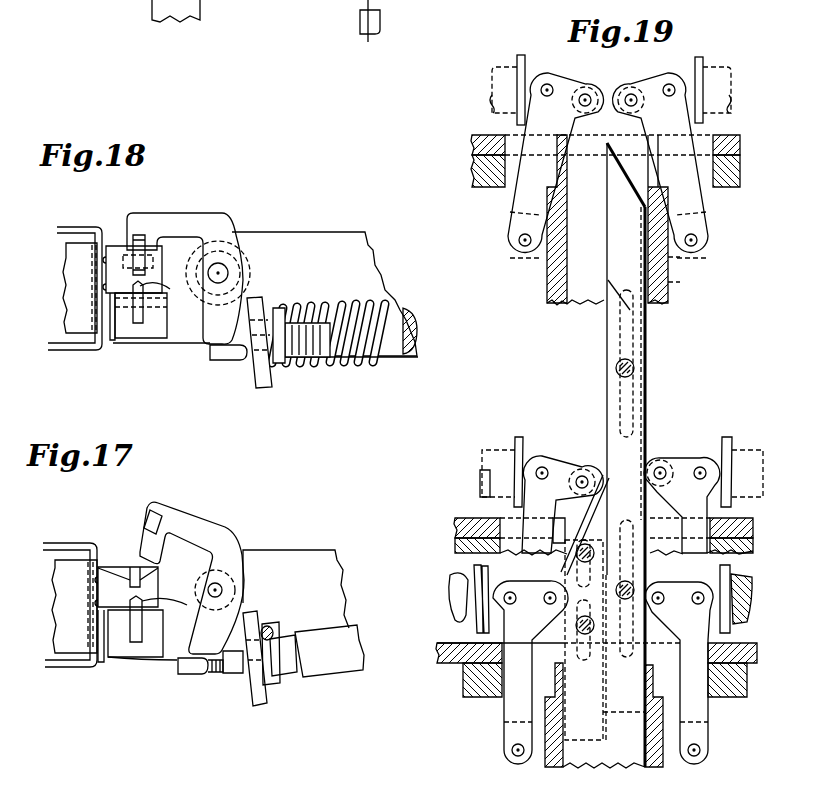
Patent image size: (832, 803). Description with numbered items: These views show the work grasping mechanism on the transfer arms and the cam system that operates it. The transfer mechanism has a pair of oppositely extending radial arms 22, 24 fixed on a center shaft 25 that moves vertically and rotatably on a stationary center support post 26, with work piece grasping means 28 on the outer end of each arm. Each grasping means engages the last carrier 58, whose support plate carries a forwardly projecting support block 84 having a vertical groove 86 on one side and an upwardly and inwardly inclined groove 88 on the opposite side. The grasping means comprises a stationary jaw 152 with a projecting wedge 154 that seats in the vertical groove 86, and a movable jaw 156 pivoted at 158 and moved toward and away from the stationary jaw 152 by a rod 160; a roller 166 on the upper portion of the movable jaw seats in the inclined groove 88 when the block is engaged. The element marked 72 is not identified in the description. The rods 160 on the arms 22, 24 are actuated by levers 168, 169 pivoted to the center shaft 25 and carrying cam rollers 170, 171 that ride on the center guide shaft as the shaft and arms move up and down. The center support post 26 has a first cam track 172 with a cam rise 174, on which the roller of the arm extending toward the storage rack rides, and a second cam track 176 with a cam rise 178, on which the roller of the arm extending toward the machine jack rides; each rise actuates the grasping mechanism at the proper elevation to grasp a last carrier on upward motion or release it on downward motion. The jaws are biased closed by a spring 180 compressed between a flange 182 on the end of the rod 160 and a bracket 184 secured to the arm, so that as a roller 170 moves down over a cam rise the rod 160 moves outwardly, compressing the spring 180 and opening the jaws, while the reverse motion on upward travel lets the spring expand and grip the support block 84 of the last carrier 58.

In FIG. 18, the radial arm 22 is at (326, 219).
In FIG. 17, the radial arm 22 is at (315, 550).
In FIG. 19, the radial arm 22 is at (484, 189).
In FIG. 19, the radial arm 24 is at (725, 190).
In FIG. 19, the center shaft 25 is at (667, 277).
In FIG. 19, the center support post 26 is at (650, 417).
In FIG. 18, the work piece grasping means 28 is at (214, 367).
In FIG. 17, the work piece grasping means 28 is at (169, 676).
In FIG. 18, the last carrier 58 is at (64, 227).
In FIG. 17, the last carrier 58 is at (57, 545).
In FIG. 18, the strip 72 is at (112, 342).
In FIG. 17, the strip 72 is at (103, 660).
In FIG. 18, the support block 84 is at (109, 252).
In FIG. 17, the support block 84 is at (108, 568).
In FIG. 18, the vertical groove 86 is at (144, 285).
In FIG. 17, the vertical groove 86 is at (141, 598).
In FIG. 18, the inclined groove 88 is at (148, 252).
In FIG. 17, the inclined groove 88 is at (134, 570).
In FIG. 18, the stationary jaw 152 is at (153, 340).
In FIG. 17, the stationary jaw 152 is at (130, 658).
In FIG. 18, the wedge 154 is at (141, 297).
In FIG. 17, the wedge 154 is at (136, 609).
In FIG. 18, the movable jaw 156 is at (196, 220).
In FIG. 17, the movable jaw 156 is at (217, 538).
In FIG. 18, the pivot 158 is at (232, 280).
In FIG. 17, the pivot 158 is at (222, 592).
In FIG. 18, the rod 160 is at (404, 307).
In FIG. 17, the rod 160 is at (336, 642).
In FIG. 18, the roller 166 is at (139, 232).
In FIG. 17, the roller 166 is at (160, 527).
In FIG. 19, the lever 168 is at (533, 128).
In FIG. 19, the lever 169 is at (692, 139).
In FIG. 19, the cam roller 170 is at (598, 88).
In FIG. 19, the cam roller 171 is at (634, 88).
In FIG. 19, the first cam track 172 is at (605, 357).
In FIG. 19, the cam rise 174 is at (572, 500).
In FIG. 19, the second cam track 176 is at (650, 370).
In FIG. 19, the cam rise 178 is at (628, 176).
In FIG. 18, the spring 180 is at (372, 302).
In FIG. 17, the spring 180 is at (268, 630).
In FIG. 19, the spring 180 is at (459, 571).
In FIG. 19, the flange 182 is at (537, 38).
In FIG. 18, the bracket 184 is at (256, 300).
In FIG. 17, the bracket 184 is at (258, 703).